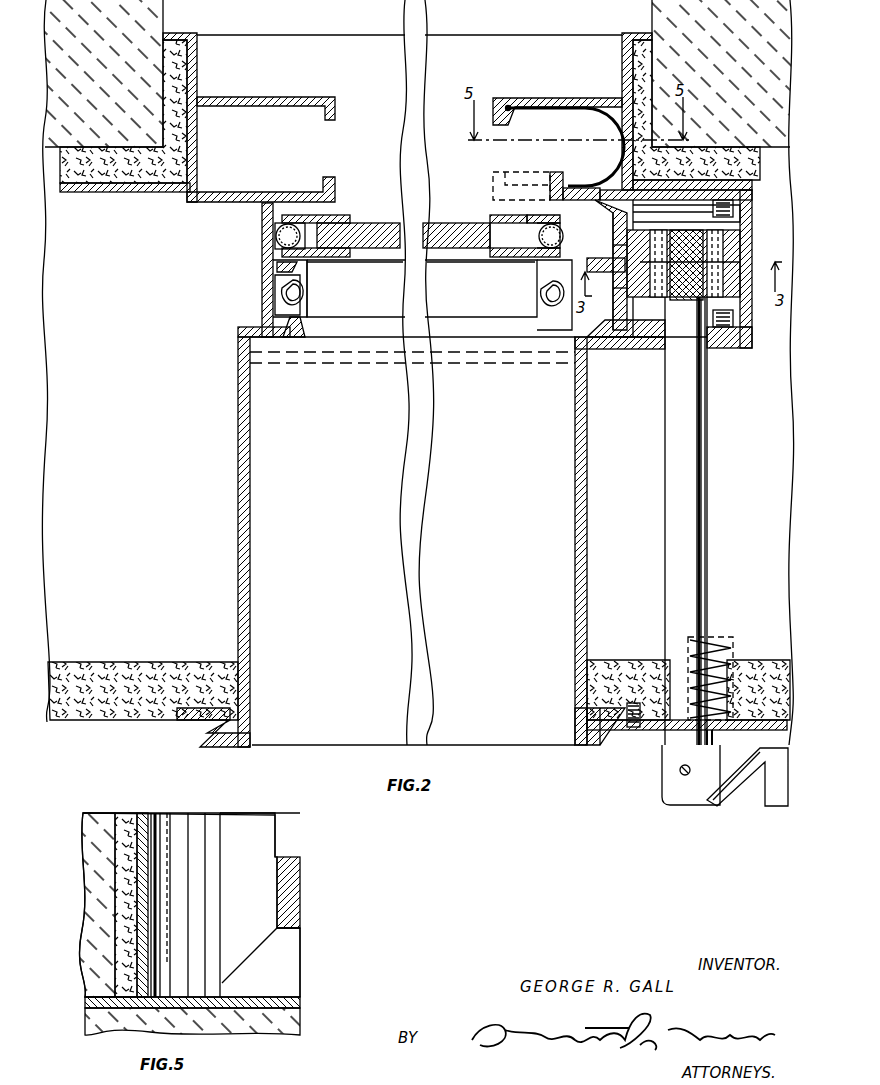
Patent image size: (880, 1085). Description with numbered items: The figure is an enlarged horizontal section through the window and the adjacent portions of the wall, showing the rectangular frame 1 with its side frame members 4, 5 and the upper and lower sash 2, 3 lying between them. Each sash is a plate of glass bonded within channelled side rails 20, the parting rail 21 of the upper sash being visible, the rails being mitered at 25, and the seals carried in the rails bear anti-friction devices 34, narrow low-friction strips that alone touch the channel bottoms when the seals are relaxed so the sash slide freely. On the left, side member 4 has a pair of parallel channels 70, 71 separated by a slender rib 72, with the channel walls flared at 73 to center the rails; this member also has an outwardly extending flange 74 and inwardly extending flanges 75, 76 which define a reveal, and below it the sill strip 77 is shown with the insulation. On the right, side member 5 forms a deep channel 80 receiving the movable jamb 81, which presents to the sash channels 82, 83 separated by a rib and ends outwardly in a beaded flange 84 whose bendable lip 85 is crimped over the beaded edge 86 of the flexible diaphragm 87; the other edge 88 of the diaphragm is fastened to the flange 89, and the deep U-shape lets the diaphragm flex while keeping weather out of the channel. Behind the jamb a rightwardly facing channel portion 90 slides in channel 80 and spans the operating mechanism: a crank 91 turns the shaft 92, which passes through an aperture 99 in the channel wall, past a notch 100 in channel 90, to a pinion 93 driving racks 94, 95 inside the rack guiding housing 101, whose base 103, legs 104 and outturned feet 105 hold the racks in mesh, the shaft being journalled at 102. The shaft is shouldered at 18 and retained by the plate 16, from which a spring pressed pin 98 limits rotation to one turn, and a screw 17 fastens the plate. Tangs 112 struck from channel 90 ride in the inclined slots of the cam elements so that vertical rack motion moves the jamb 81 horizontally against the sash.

In FIG. 2, the rectangular frame 1 is at (581, 752).
In FIG. 2, the upper sash 2 is at (370, 216).
In FIG. 5, the upper sash 2 is at (300, 892).
In FIG. 2, the lower sash 3 is at (345, 322).
In FIG. 2, the side frame member 4 is at (238, 474).
In FIG. 2, the side frame member 5 is at (588, 476).
In FIG. 2, the plate 16 is at (690, 715).
In FIG. 2, the screw 17 is at (633, 728).
In FIG. 2, the shoulder 18 is at (670, 766).
In FIG. 2, the side rails 20 is at (273, 312).
In FIG. 5, the side rails 20 is at (262, 840).
In FIG. 2, the parting rail 21 is at (385, 318).
In FIG. 5, the miter 25 is at (282, 950).
In FIG. 2, the anti-friction devices 34 is at (558, 306).
In FIG. 2, the channel 70 is at (276, 232).
In FIG. 2, the channel 71 is at (277, 284).
In FIG. 2, the rib 72 is at (278, 266).
In FIG. 2, the flared channel wall 73 is at (240, 333).
In FIG. 2, the outwardly extending flange 74 is at (130, 190).
In FIG. 2, the inwardly extending flange 75 is at (288, 100).
In FIG. 2, the inwardly extending flange 76 is at (268, 196).
In FIG. 2, the sill strip 77 is at (213, 748).
In FIG. 2, the channel 80 is at (748, 350).
In FIG. 2, the movable jamb 81 is at (604, 349).
In FIG. 2, the channel 82 is at (614, 233).
In FIG. 2, the channel 83 is at (622, 305).
In FIG. 2, the beaded flange 84 is at (588, 265).
In FIG. 5, the beaded flange 84 is at (217, 935).
In FIG. 2, the bendable lip 85 is at (558, 178).
In FIG. 5, the bendable lip 85 is at (200, 907).
In FIG. 2, the beaded edge 86 is at (569, 186).
In FIG. 2, the flexible diaphragm 87 is at (608, 133).
In FIG. 5, the flexible diaphragm 87 is at (168, 820).
In FIG. 2, the diaphragm edge 88 is at (509, 106).
In FIG. 2, the flange 89 is at (556, 100).
In FIG. 5, the flange 89 is at (128, 818).
In FIG. 2, the channel portion 90 is at (623, 349).
In FIG. 2, the crank 91 is at (777, 806).
In FIG. 2, the shaft 92 is at (708, 552).
In FIG. 2, the pinion 93 is at (737, 250).
In FIG. 2, the rack 94 is at (722, 264).
In FIG. 2, the rack 95 is at (620, 288).
In FIG. 2, the spring pressed pin 98 is at (714, 740).
In FIG. 2, the aperture 99 is at (711, 347).
In FIG. 2, the notch 100 is at (742, 346).
In FIG. 2, the rack guiding housing 101 is at (740, 186).
In FIG. 2, the journal 102 is at (651, 341).
In FIG. 2, the housing base 103 is at (614, 245).
In FIG. 2, the housing legs 104 is at (735, 232).
In FIG. 2, the outturned feet 105 is at (734, 208).
In FIG. 2, the tangs 112 is at (735, 318).